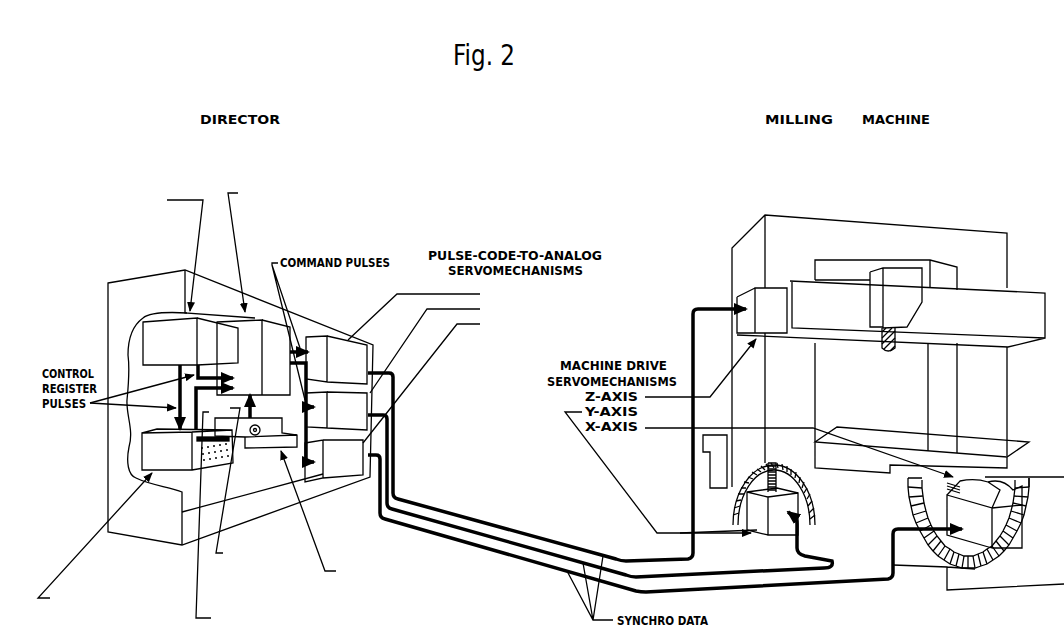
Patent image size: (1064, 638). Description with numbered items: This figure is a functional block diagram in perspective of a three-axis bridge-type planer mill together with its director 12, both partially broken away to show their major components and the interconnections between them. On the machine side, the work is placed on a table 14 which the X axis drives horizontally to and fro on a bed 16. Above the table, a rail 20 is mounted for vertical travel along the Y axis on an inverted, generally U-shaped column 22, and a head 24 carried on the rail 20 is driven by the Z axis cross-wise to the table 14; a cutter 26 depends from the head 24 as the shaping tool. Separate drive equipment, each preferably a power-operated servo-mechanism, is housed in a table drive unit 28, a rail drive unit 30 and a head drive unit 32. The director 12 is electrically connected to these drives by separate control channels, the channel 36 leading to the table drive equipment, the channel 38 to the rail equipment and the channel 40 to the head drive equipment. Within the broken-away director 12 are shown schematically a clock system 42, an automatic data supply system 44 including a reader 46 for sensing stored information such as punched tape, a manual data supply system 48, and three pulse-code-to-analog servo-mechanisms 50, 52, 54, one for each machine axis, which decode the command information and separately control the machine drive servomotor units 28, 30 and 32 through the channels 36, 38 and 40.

The director 12 is at (153, 266).
The table 14 is at (916, 455).
The bed 16 is at (980, 584).
The rail 20 is at (1017, 320).
The column 22 is at (947, 253).
The head 24 is at (913, 305).
The cutter 26 is at (879, 342).
The table drive unit 28 is at (1019, 530).
The rail drive unit 30 is at (777, 527).
The head drive unit 32 is at (781, 316).
The table control channel 36 is at (489, 527).
The rail control channel 38 is at (528, 546).
The head control channel 40 is at (572, 545).
The clock system 42 is at (181, 351).
The automatic data supply system 44 is at (255, 325).
The reader 46 is at (247, 443).
The manual data supply system 48 is at (205, 519).
The pulse-code-to-analog servo-mechanism 50 is at (358, 470).
The pulse-code-to-analog servo-mechanism 52 is at (358, 418).
The pulse-code-to-analog servo-mechanism 54 is at (356, 366).